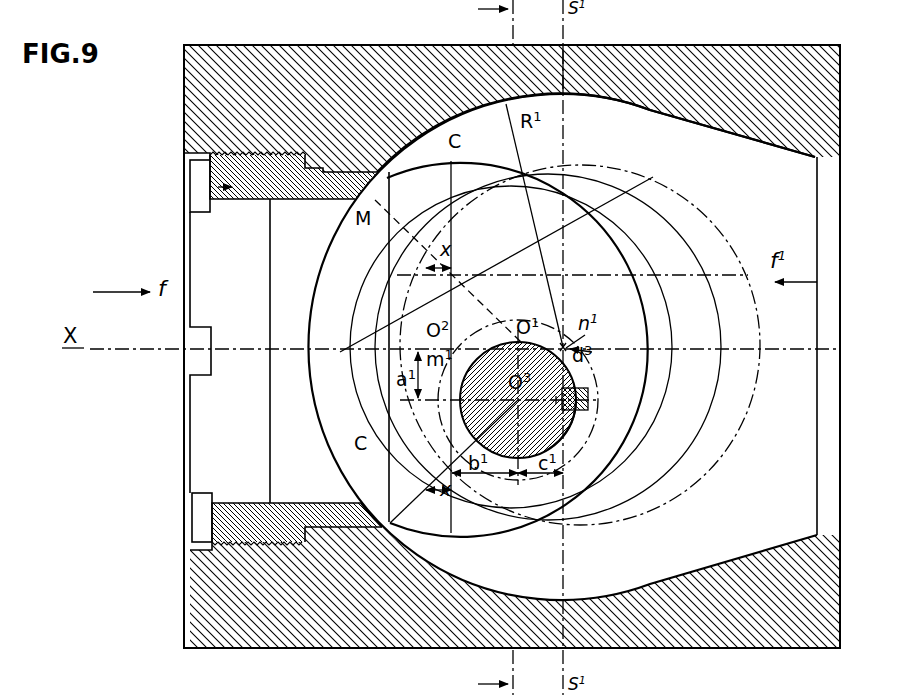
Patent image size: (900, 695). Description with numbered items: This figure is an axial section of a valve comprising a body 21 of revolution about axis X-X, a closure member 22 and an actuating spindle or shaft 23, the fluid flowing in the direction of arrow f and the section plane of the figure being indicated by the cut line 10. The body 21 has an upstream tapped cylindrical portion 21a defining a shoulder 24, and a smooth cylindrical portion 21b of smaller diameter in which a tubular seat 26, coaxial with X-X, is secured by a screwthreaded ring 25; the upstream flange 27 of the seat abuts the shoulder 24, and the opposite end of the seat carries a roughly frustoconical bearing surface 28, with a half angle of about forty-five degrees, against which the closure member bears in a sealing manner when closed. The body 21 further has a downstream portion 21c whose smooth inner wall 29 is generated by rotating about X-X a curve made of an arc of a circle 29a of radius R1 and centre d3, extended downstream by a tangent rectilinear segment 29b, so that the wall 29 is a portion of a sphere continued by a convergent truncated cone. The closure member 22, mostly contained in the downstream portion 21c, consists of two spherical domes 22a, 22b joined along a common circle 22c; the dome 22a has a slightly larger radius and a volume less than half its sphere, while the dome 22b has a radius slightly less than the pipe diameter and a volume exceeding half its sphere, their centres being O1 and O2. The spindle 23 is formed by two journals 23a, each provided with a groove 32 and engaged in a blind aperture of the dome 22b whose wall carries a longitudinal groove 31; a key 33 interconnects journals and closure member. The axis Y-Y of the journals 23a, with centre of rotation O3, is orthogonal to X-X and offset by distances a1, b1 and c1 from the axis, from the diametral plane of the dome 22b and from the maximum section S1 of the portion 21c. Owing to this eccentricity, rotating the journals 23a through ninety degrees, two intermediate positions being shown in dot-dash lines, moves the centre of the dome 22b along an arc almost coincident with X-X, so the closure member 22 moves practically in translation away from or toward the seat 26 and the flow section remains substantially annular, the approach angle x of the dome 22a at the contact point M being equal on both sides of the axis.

The section line 10 is at (512, 347).
The body 21 is at (702, 44).
The upstream tapped cylindrical portion 21a is at (246, 125).
The smooth cylindrical portion 21b is at (342, 148).
The downstream portion 21c is at (575, 72).
The closure member 22 is at (498, 532).
The spherical dome 22a is at (320, 290).
The spherical dome 22b is at (603, 254).
The common circle 22c is at (392, 202).
The actuating spindle or shaft 23 is at (460, 431).
The half spindle or journal 23a is at (568, 424).
The shoulder 24 is at (300, 546).
The screwthreaded ring 25 is at (212, 190).
The tubular seat 26 is at (283, 503).
The upstream flange 27 is at (292, 546).
The bearing surface 28 is at (405, 512).
The inner wall 29 is at (587, 108).
The arc of a circle 29a is at (487, 115).
The rectilinear segment 29b is at (697, 132).
The longitudinal groove 31 is at (586, 394).
The groove 32 is at (557, 401).
The key 33 is at (587, 404).